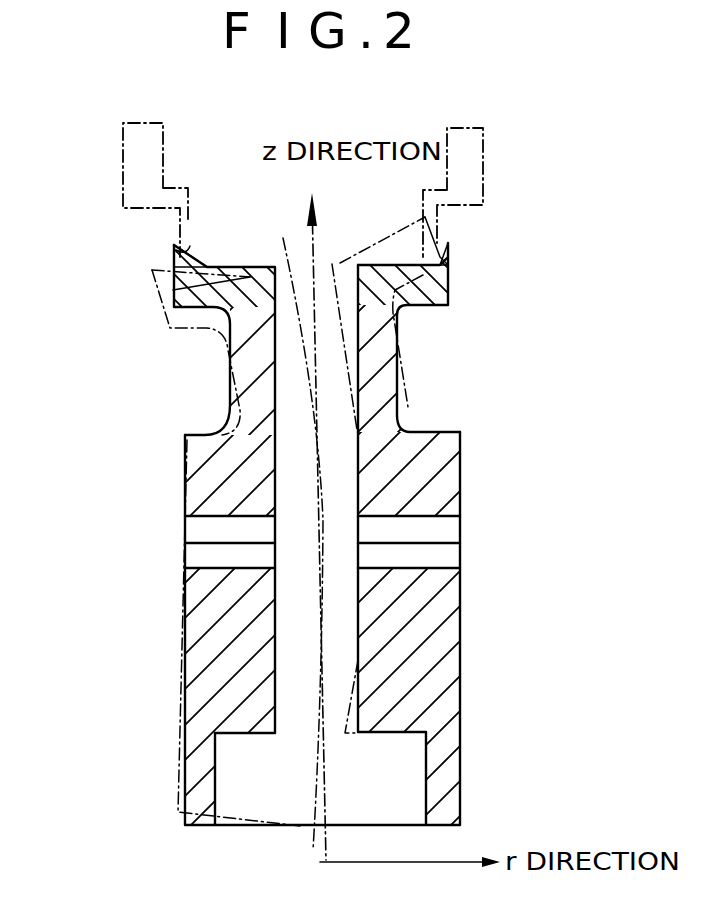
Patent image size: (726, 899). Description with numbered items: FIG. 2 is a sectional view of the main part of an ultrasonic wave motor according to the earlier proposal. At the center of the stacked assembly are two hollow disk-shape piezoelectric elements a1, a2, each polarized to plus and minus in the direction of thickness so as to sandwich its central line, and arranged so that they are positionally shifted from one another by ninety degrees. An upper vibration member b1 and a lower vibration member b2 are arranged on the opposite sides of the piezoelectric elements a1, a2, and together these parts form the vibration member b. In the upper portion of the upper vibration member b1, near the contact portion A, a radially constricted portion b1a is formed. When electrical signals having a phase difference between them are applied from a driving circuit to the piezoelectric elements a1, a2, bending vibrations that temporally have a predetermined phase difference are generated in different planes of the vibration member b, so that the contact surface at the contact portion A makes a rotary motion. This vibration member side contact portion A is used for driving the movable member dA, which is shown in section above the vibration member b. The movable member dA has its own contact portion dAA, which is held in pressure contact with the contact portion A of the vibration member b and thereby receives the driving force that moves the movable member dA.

The movable member dA is at (138, 172).
The contact portion dAA is at (182, 252).
The contact portion A is at (174, 262).
The radially constricted portion b1a is at (228, 378).
The upper vibration member b1 is at (192, 476).
The vibration member b is at (363, 449).
The piezoelectric element a1 is at (440, 532).
The piezoelectric element a2 is at (443, 565).
The lower vibration member b2 is at (192, 687).